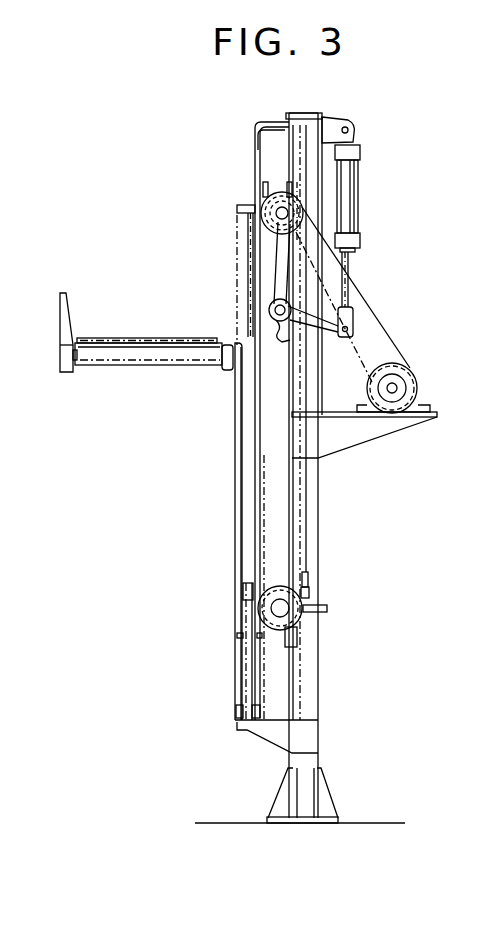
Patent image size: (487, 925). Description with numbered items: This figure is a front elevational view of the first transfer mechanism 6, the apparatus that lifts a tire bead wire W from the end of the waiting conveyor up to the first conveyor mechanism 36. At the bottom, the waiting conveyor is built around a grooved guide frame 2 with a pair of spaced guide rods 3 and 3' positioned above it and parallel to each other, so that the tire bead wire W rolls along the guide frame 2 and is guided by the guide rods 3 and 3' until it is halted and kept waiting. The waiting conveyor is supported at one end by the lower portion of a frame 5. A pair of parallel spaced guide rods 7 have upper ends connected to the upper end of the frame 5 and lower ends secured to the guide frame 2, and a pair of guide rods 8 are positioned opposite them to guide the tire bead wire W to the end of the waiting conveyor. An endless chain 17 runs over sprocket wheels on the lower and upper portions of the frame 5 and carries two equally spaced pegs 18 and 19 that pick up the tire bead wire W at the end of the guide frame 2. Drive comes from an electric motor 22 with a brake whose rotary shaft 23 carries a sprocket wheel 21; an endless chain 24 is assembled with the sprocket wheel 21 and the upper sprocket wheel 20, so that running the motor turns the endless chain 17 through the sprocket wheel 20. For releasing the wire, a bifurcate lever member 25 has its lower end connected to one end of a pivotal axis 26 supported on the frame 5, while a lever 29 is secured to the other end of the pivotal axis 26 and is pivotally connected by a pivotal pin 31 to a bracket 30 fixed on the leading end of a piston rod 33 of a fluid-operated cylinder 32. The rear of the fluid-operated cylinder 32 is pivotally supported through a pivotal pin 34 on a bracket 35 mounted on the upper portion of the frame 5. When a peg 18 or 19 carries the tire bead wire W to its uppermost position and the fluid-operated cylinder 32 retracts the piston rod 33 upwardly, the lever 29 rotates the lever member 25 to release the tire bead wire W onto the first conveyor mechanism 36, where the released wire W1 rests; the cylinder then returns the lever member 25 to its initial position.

The grooved guide frame 2 is at (237, 712).
The guide rod 3 is at (279, 630).
The guide rod 3' is at (226, 651).
The frame 5 is at (312, 700).
The first transfer mechanism 6 is at (253, 160).
The guide rods 7 is at (262, 128).
The guide rods 8 is at (238, 430).
The endless chain 17 is at (305, 545).
The peg 18 is at (322, 606).
The peg 19 is at (238, 212).
The sprocket wheel 20 is at (273, 206).
The sprocket wheel 21 is at (412, 386).
The electric motor 22 is at (410, 372).
The rotary shaft 23 is at (400, 393).
The endless chain 24 is at (358, 302).
The bifurcate lever member 25 is at (272, 192).
The pivotal axis 26 is at (276, 330).
The lever 29 is at (325, 335).
The bracket 30 is at (355, 318).
The pivotal pin 31 is at (350, 333).
The fluid-operated cylinder 32 is at (356, 200).
The piston rod 33 is at (349, 265).
The pivotal pin 34 is at (350, 131).
The bracket 35 is at (335, 115).
The first conveyor mechanism 36 is at (143, 370).
The tire bead wire W is at (246, 283).
The workpiece W1 is at (168, 338).